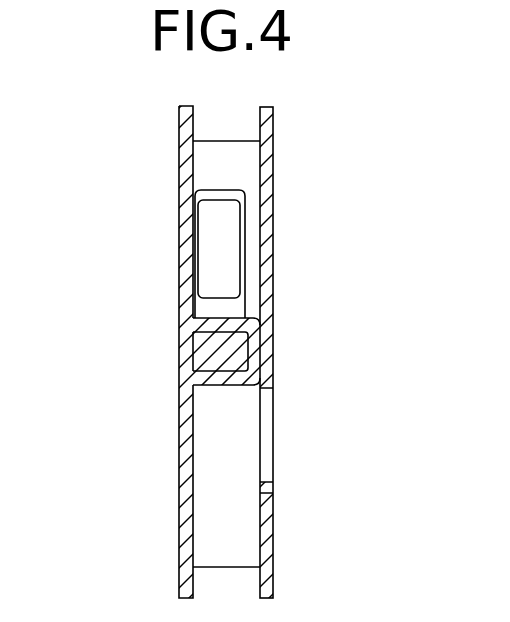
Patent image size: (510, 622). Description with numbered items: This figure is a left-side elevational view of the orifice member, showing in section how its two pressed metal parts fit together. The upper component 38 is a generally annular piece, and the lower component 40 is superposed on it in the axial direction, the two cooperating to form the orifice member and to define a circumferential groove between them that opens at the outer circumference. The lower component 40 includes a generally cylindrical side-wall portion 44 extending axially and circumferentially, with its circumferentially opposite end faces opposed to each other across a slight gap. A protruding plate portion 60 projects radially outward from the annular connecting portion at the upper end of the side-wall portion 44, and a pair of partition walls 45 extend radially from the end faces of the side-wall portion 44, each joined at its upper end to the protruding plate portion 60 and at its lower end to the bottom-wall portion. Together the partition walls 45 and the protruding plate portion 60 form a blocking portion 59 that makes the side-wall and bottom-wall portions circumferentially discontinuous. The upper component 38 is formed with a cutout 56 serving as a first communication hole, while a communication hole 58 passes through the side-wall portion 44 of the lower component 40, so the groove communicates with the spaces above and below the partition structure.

The upper component 38 is at (277, 128).
The lower component 40 is at (172, 131).
The side-wall portion 44 is at (210, 163).
The partition wall 45 is at (230, 325).
The cutout 56 is at (270, 485).
The communication hole 58 is at (220, 197).
The blocking portion 59 is at (383, 285).
The protruding plate portion 60 is at (253, 350).